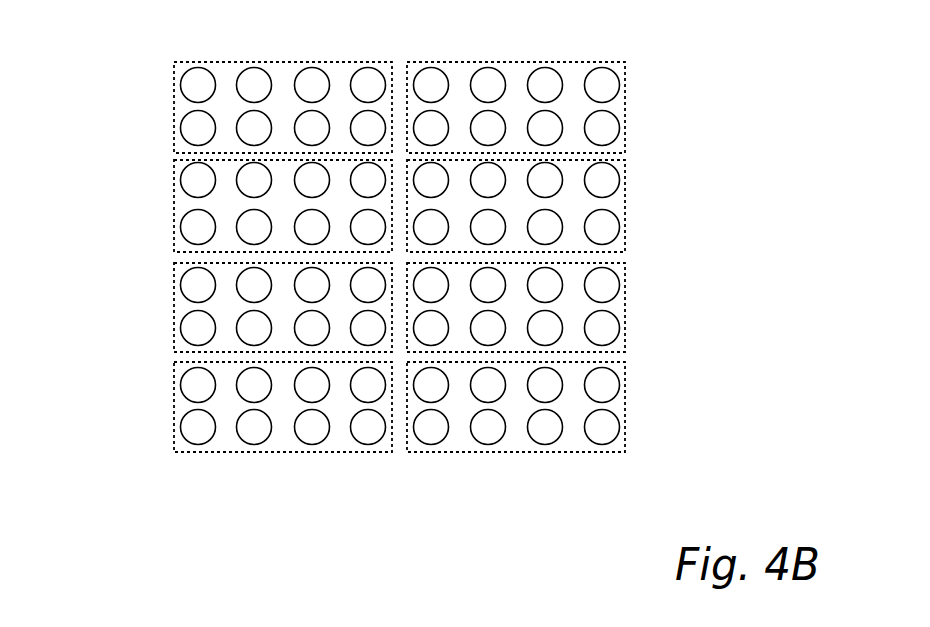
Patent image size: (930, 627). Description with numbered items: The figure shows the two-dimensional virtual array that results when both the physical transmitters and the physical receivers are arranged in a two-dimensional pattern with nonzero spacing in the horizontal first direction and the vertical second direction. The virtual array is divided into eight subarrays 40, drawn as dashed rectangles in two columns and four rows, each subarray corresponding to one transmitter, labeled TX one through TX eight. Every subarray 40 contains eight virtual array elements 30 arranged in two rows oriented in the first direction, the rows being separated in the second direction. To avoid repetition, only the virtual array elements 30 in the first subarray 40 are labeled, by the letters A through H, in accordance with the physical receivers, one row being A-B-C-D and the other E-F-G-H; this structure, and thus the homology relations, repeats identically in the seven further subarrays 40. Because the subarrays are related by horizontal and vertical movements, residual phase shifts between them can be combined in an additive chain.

The virtual array element 30 is at (488, 64).
The subarray 40 is at (401, 257).